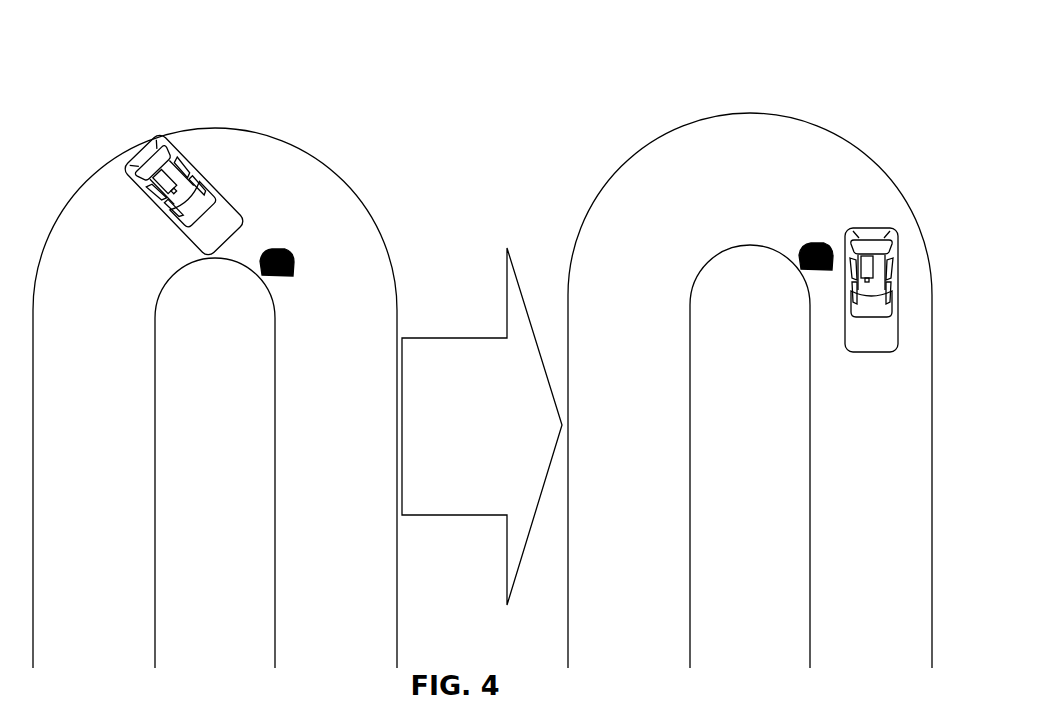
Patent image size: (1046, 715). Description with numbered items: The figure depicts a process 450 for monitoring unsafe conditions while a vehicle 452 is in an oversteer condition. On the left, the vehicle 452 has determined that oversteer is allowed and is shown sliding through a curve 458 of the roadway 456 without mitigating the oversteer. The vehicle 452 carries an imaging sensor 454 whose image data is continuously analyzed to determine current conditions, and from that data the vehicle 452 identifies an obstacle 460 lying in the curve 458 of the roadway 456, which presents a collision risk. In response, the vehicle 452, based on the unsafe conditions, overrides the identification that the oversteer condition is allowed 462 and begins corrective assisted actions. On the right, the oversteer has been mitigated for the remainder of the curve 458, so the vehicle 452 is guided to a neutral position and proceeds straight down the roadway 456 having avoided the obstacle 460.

The process 450 is at (81, 80).
The vehicle 452 is at (158, 148).
The imaging sensor 454 is at (173, 182).
The roadway 456 is at (146, 378).
The curve 458 is at (268, 158).
The obstacle 460 is at (273, 273).
The override of the identification that the oversteer condition is allowed 462 is at (443, 337).